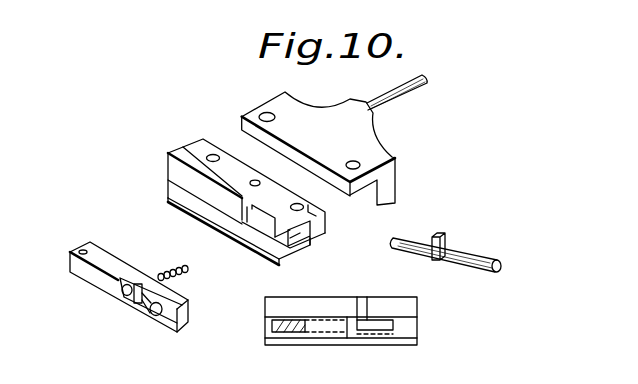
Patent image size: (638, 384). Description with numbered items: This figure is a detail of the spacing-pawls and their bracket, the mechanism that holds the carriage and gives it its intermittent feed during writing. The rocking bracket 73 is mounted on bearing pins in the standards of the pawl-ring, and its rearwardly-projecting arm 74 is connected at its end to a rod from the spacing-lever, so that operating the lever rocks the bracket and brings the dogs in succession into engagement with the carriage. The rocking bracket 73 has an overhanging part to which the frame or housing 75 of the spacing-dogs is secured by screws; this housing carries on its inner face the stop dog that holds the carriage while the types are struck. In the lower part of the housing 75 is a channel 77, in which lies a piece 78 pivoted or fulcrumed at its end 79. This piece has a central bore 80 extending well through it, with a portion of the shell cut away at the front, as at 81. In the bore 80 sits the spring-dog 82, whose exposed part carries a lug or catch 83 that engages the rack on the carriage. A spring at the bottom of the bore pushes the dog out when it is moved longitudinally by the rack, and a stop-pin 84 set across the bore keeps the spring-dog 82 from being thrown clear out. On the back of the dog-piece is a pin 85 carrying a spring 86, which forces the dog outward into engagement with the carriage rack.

The rocking bracket 73 is at (318, 148).
The rearwardly-projecting arm 74 is at (383, 100).
The frame or housing 75 is at (163, 173).
The channel 77 is at (297, 260).
The piece 78 is at (317, 242).
The end 79 is at (129, 274).
The central bore 80 is at (173, 318).
The cut-away portion of the shell 81 is at (163, 317).
The spring-dog 82 is at (477, 260).
The lug or catch 83 is at (442, 245).
The stop-pin 84 is at (390, 328).
The pin 85 is at (197, 263).
The spring 86 is at (167, 267).